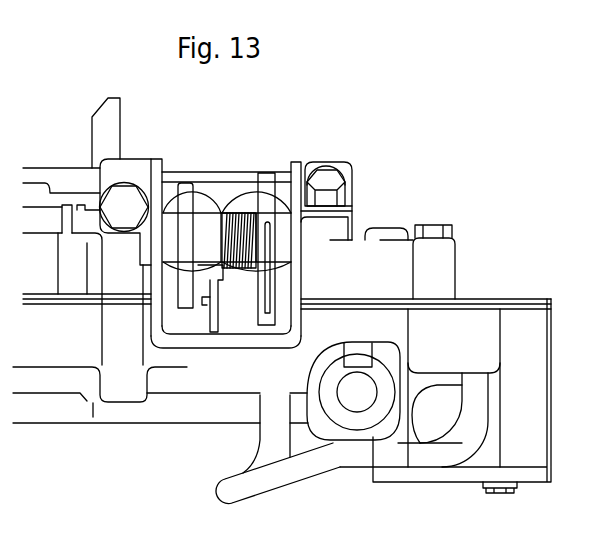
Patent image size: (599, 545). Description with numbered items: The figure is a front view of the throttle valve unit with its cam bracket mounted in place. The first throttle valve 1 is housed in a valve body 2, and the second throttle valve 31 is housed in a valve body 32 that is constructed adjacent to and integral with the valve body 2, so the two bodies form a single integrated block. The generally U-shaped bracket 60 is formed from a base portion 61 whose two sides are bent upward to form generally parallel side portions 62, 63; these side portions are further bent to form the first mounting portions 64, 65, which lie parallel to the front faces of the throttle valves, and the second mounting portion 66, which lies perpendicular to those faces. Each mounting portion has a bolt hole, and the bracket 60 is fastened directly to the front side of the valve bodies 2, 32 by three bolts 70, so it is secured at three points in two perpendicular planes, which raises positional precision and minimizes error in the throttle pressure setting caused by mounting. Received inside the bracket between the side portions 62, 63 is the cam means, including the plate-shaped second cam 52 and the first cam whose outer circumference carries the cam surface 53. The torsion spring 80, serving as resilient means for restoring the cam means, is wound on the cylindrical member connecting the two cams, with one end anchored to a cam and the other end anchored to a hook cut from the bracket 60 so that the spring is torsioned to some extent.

The first throttle valve 1 is at (308, 142).
The valve body 2 is at (226, 204).
The second throttle valve 31 is at (145, 130).
The valve body 32 is at (213, 170).
The second cam 52 is at (185, 188).
The cam surface 53 is at (268, 173).
The bracket 60 is at (308, 330).
The base portion 61 is at (220, 338).
The side portion 62 is at (300, 287).
The side portion 63 is at (152, 285).
The first mounting portion 64 is at (312, 160).
The first mounting portion 65 is at (130, 167).
The second mounting portion 66 is at (350, 213).
The bolt 70 is at (115, 205).
The torsion spring 80 is at (240, 200).